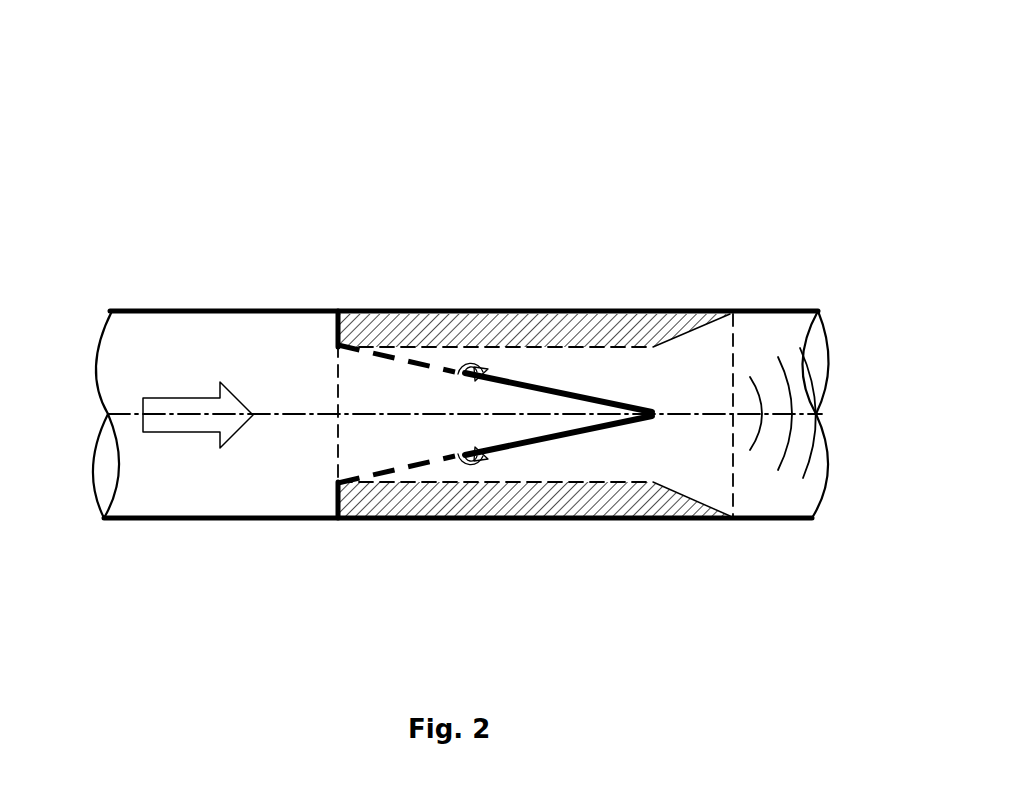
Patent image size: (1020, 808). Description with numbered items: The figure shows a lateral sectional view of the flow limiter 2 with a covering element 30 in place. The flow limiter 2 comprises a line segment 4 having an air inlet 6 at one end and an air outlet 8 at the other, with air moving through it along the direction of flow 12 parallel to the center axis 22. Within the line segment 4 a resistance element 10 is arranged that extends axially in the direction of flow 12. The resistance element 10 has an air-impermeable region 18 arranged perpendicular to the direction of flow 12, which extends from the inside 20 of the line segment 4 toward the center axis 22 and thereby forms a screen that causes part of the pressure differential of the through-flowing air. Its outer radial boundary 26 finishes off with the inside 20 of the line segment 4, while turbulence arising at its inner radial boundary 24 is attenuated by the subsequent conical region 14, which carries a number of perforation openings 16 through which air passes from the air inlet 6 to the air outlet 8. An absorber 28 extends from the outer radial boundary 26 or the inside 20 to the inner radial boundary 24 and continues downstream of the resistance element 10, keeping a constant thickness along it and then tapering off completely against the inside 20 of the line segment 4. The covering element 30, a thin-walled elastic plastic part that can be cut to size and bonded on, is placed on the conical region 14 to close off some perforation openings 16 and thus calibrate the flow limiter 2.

The flow limiter 2 is at (489, 98).
The line segment 4 is at (657, 309).
The air inlet 6 is at (86, 356).
The air outlet 8 is at (836, 369).
The resistance element 10 is at (408, 478).
The direction of flow 12 is at (160, 405).
The conical region 14 is at (400, 352).
The perforation openings 16 is at (478, 328).
The air-impermeable region 18 is at (337, 496).
The inside of the line segment 20 is at (176, 498).
The center axis 22 is at (822, 414).
The inner radial boundary 24 is at (325, 346).
The outer radial boundary 26 is at (326, 306).
The absorber 28 is at (540, 495).
The covering element 30 is at (630, 427).